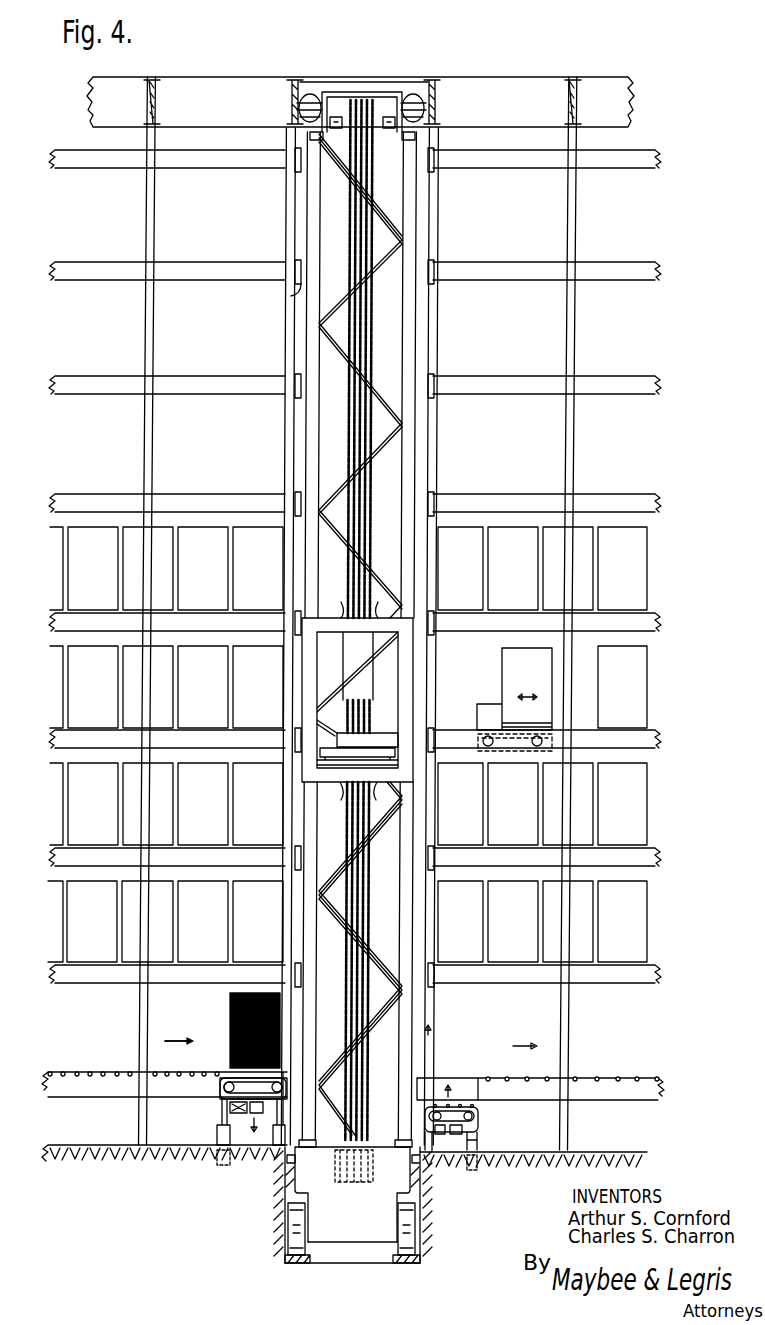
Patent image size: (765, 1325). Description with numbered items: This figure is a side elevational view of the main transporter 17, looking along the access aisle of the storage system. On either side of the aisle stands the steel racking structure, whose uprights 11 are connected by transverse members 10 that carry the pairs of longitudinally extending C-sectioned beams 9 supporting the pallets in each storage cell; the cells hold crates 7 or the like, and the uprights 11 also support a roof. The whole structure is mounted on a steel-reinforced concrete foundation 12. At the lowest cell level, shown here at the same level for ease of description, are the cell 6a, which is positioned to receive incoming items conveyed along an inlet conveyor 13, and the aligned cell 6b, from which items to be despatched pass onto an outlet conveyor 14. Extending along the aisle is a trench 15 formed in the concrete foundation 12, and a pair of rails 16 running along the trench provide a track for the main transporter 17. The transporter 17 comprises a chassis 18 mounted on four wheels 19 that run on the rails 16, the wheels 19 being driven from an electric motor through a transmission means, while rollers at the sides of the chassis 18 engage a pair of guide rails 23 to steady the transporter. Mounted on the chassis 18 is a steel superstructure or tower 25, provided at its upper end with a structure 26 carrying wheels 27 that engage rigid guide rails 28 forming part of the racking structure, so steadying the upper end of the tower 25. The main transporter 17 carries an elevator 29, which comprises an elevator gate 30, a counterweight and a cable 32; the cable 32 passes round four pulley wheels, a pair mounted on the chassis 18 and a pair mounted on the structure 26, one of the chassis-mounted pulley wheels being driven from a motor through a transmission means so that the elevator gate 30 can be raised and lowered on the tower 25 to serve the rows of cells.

The cell 6a is at (122, 1035).
The cell 6b is at (618, 1043).
The crates 7 is at (77, 562).
The C-sectioned beams 9 is at (527, 268).
The transverse members 10 is at (300, 295).
The uprights 11 is at (565, 333).
The concrete foundation 12 is at (98, 1193).
The inlet conveyor 13 is at (70, 1072).
The outlet conveyor 14 is at (627, 1078).
The trench 15 is at (370, 1252).
The rails 16 is at (300, 1262).
The main transporter 17 is at (393, 1180).
The chassis 18 is at (307, 1183).
The wheels 19 is at (295, 1227).
The guide rails 23 is at (280, 1157).
The tower 25 is at (305, 447).
The structure 26 is at (363, 92).
The wheels 27 is at (295, 105).
The rigid guide rails 28 is at (293, 75).
The elevator 29 is at (301, 773).
The elevator gate 30 is at (413, 680).
The cable 32 is at (352, 904).